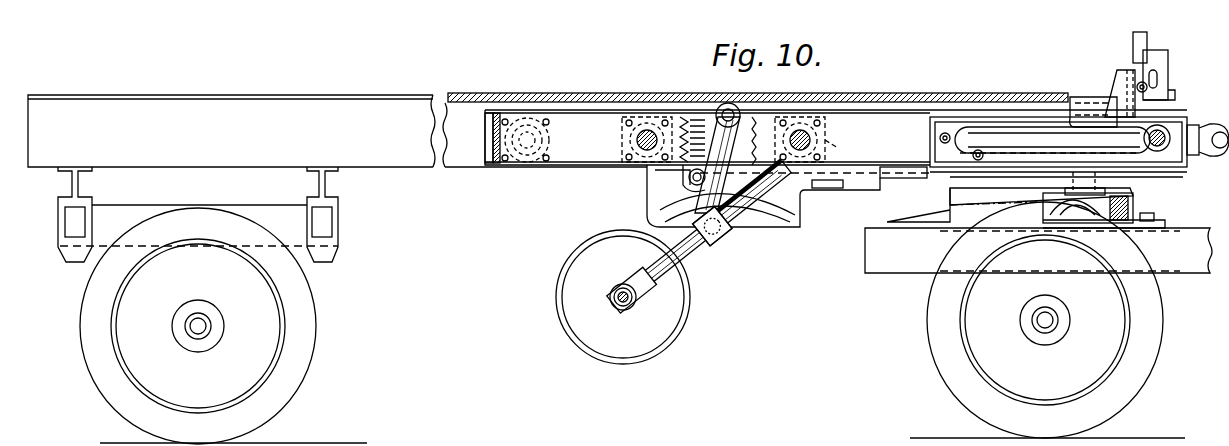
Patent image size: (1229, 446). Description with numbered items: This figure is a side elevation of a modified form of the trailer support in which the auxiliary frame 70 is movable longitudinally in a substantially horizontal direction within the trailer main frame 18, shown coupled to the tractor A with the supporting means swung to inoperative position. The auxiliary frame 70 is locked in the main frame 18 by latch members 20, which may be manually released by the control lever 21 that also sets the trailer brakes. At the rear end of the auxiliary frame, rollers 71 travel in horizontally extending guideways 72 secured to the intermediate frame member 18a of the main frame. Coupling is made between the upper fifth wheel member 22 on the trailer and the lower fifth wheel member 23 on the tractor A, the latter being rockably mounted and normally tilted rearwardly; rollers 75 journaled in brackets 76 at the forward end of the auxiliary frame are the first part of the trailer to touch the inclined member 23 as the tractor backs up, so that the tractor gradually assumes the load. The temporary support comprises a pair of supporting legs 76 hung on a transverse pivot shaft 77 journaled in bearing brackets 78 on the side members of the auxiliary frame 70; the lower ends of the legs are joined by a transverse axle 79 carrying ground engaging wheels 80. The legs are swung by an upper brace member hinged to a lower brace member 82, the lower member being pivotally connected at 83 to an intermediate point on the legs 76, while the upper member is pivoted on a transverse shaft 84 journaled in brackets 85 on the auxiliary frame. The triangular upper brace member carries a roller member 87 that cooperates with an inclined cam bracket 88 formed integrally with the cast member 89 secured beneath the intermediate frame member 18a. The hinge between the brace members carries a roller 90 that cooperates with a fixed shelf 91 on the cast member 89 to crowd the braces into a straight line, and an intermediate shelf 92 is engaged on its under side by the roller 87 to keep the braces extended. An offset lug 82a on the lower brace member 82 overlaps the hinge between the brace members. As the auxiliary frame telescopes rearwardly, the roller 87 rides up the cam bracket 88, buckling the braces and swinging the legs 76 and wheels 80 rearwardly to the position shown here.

The trailer main frame 18 is at (398, 158).
The intermediate frame member 18a is at (473, 157).
The latch members 20 is at (1157, 62).
The control lever 21 is at (1135, 40).
The upper fifth wheel member 22 is at (1163, 172).
The lower fifth wheel member 23 is at (1170, 178).
The auxiliary frame 70 is at (857, 130).
The rollers 71 is at (540, 108).
The guideways 72 is at (488, 113).
The rollers 75 is at (1212, 124).
The supporting legs 76 is at (692, 248).
The transverse pivot shaft 77 is at (842, 97).
The bearing brackets 78 is at (830, 143).
The transverse axle 79 is at (625, 300).
The ground engaging wheels 80 is at (673, 315).
The lower brace member 82 is at (755, 175).
The offset lug 82a is at (802, 133).
The pivotal connection 83 is at (720, 240).
The transverse shaft 84 is at (650, 132).
The brackets 85 is at (638, 120).
The roller member 87 is at (692, 192).
The inclined cam bracket 88 is at (800, 210).
The cast member 89 is at (767, 222).
The roller 90 is at (733, 103).
The fixed shelf 91 is at (893, 173).
The intermediate shelf 92 is at (835, 188).
The tractor A is at (1183, 255).